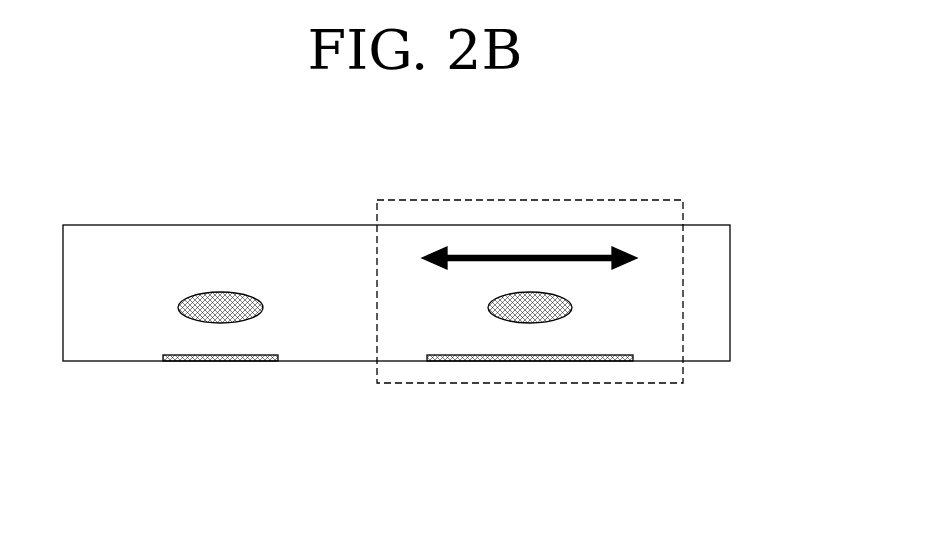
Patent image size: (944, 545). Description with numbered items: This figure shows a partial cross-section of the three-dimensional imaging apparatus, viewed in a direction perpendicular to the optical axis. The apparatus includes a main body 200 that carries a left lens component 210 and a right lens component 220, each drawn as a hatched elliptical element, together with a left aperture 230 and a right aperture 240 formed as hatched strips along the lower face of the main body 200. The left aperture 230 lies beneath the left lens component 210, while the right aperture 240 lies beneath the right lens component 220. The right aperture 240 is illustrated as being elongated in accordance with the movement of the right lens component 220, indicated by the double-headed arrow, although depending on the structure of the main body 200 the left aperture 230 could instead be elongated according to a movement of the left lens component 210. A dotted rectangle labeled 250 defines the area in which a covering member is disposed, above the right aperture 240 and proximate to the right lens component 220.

The main body 200 is at (333, 225).
The left lens component 210 is at (218, 302).
The right lens component 220 is at (530, 302).
The left aperture 230 is at (222, 361).
The right aperture 240 is at (537, 361).
The movable region 250 is at (683, 291).